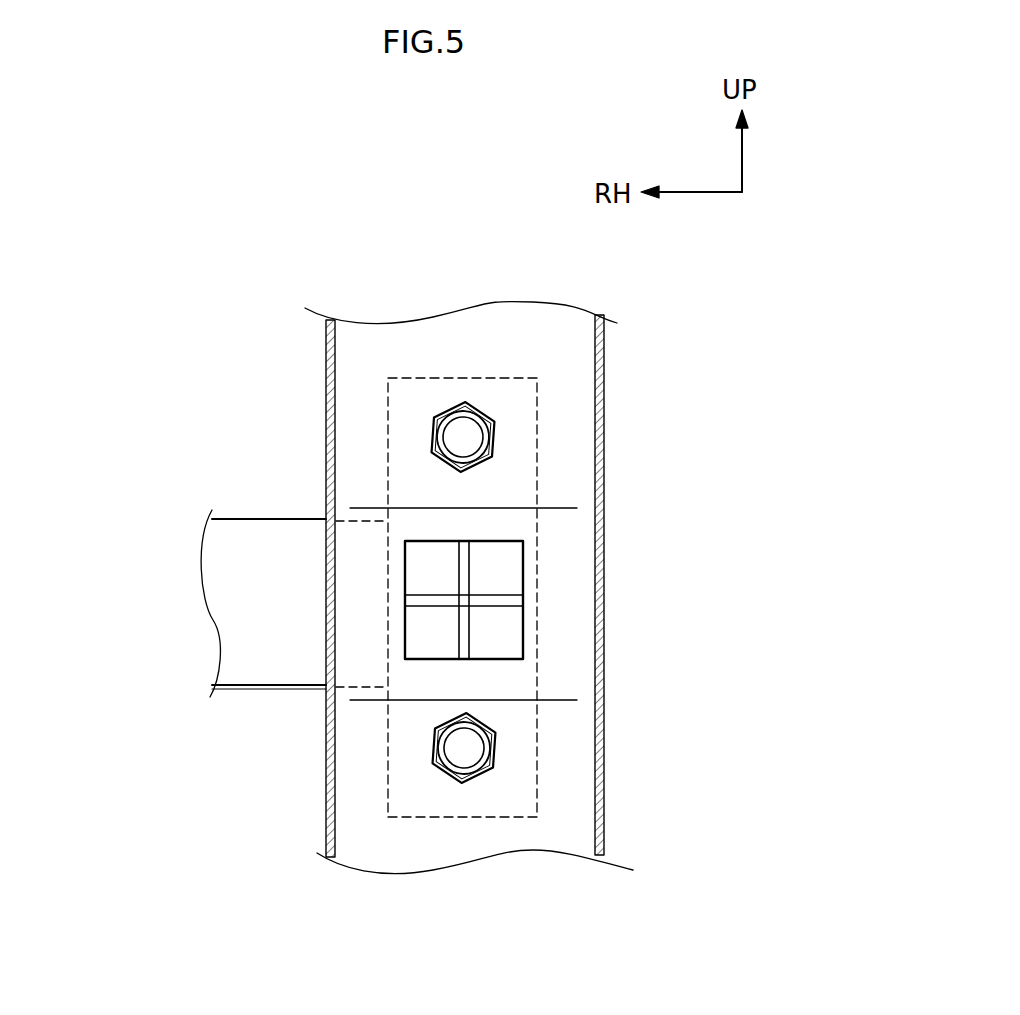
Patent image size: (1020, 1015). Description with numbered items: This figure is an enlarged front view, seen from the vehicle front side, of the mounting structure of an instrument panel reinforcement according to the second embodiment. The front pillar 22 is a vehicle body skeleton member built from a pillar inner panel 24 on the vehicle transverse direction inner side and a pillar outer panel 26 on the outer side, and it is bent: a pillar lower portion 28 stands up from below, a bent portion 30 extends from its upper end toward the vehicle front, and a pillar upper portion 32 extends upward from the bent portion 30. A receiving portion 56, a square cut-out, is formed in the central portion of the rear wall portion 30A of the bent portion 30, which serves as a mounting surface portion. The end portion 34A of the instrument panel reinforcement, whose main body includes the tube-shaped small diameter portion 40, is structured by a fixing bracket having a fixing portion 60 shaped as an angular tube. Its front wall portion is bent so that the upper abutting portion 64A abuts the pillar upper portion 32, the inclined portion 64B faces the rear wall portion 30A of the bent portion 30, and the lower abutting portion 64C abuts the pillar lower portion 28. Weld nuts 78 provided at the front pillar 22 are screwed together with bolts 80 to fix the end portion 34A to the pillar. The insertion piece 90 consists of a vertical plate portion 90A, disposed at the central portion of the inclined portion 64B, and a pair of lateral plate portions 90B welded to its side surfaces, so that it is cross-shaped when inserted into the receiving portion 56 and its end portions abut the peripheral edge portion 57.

The front pillar 22 is at (650, 356).
The pillar inner panel 24 is at (326, 353).
The pillar outer panel 26 is at (603, 388).
The pillar lower portion 28 is at (603, 783).
The bent portion 30 is at (616, 600).
The rear wall portion 30A is at (567, 570).
The pillar upper portion 32 is at (603, 410).
The end portion 34A is at (505, 238).
The small diameter portion 40 is at (260, 530).
The receiving portion 56 is at (495, 657).
The peripheral edge portion 57 is at (480, 527).
The fixing portion 60 is at (298, 792).
The upper abutting portion 64A is at (410, 393).
The inclined portion 64B is at (415, 572).
The lower abutting portion 64C is at (390, 746).
The weld nut 78 is at (473, 410).
The bolt 80 is at (467, 443).
The insertion piece 90 is at (500, 622).
The vertical plate portion 90A is at (462, 548).
The lateral plate portion 90B is at (485, 600).